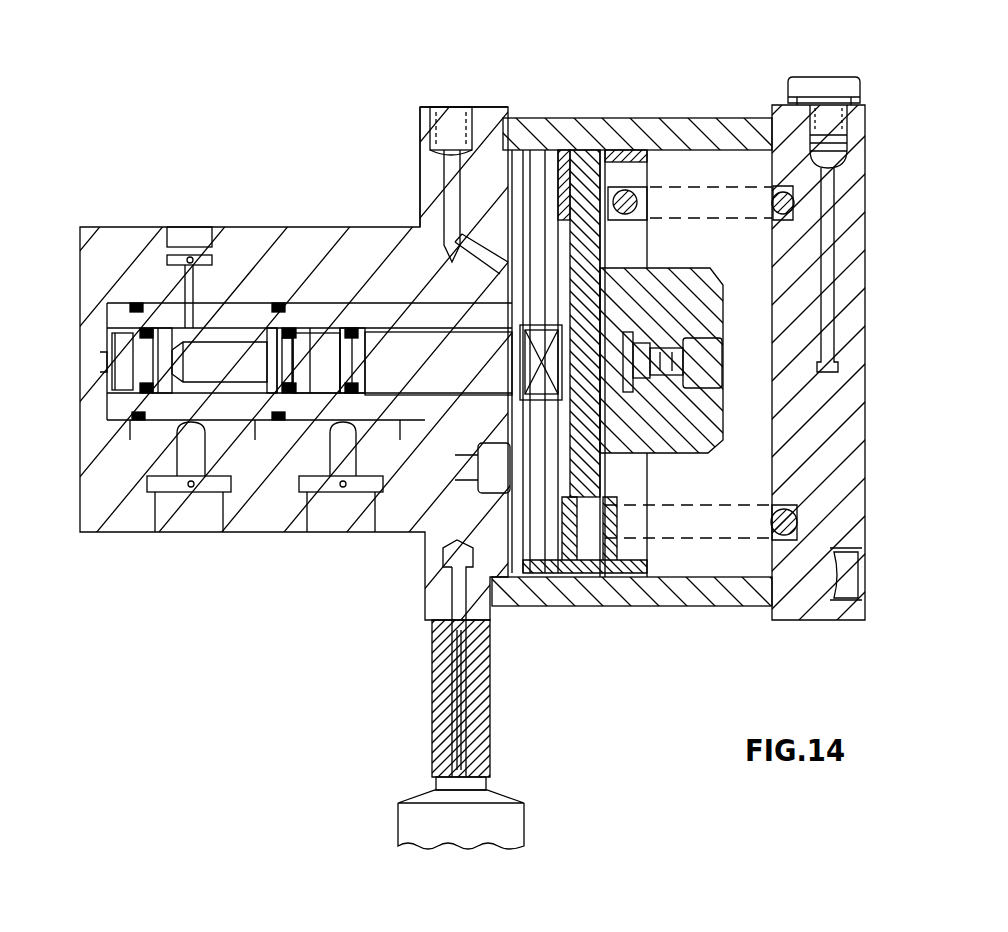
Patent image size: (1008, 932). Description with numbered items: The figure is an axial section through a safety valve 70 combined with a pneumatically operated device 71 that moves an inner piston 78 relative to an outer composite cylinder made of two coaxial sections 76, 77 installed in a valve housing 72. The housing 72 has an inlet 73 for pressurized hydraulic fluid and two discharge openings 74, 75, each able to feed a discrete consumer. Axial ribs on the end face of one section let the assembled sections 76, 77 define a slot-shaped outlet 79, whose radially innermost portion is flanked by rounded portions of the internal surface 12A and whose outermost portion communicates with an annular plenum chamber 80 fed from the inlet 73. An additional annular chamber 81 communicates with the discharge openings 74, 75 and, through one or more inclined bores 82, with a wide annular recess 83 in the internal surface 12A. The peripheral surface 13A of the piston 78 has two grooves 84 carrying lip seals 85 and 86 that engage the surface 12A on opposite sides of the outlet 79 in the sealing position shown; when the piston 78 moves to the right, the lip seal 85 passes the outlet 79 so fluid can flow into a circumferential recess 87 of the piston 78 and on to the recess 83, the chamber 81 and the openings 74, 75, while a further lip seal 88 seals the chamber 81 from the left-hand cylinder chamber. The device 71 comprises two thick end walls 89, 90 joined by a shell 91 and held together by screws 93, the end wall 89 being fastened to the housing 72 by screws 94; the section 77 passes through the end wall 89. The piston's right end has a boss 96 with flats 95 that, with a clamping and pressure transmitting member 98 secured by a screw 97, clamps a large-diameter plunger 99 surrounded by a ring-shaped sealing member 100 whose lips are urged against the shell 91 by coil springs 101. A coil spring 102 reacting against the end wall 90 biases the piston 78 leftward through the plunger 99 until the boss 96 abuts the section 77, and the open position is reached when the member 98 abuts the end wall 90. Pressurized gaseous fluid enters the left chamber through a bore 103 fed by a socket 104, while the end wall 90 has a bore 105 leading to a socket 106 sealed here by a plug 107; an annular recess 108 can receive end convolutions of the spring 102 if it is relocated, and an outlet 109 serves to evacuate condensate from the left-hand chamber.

The valve 70 is at (284, 112).
The pneumatically operated device 71 is at (655, 75).
The valve housing 72 is at (117, 255).
The inlet 73 is at (341, 515).
The discharge opening 74 is at (186, 515).
The discharge opening 75 is at (182, 240).
The cylinder section 76 is at (135, 397).
The cylinder section 77 is at (401, 412).
The piston 78 is at (332, 361).
The slot-shaped outlet 79 is at (297, 310).
The annular plenum chamber 80 is at (337, 310).
The annular chamber 81 is at (175, 303).
The inclined bore 82 is at (232, 300).
The annular recess 83 is at (256, 432).
The groove 84 is at (316, 363).
The lip seal 85 is at (272, 303).
The lip seal 86 is at (380, 308).
The circumferential recess 87 is at (136, 445).
The lip seal 88 is at (145, 330).
The end wall 89 is at (422, 135).
The end wall 90 is at (840, 428).
The shell 91 is at (628, 600).
The screw 93 is at (846, 574).
The screw 94 is at (482, 468).
The flat 95 is at (540, 384).
The boss 96 is at (522, 332).
The screw 97 is at (706, 361).
The clamping and pressure transmitting member 98 is at (700, 318).
The plunger 99 is at (600, 262).
The ring-shaped sealing member 100 is at (568, 128).
The coil spring 101 is at (542, 128).
The coil spring 102 is at (749, 215).
The bore 103 is at (445, 262).
The socket 104 is at (452, 125).
The bore 105 is at (830, 265).
The socket 106 is at (832, 160).
The plug 107 is at (824, 100).
The annular recess 108 is at (545, 592).
The outlet 109 is at (485, 702).
The internal surface 12A is at (308, 385).
The peripheral surface 13A is at (410, 235).